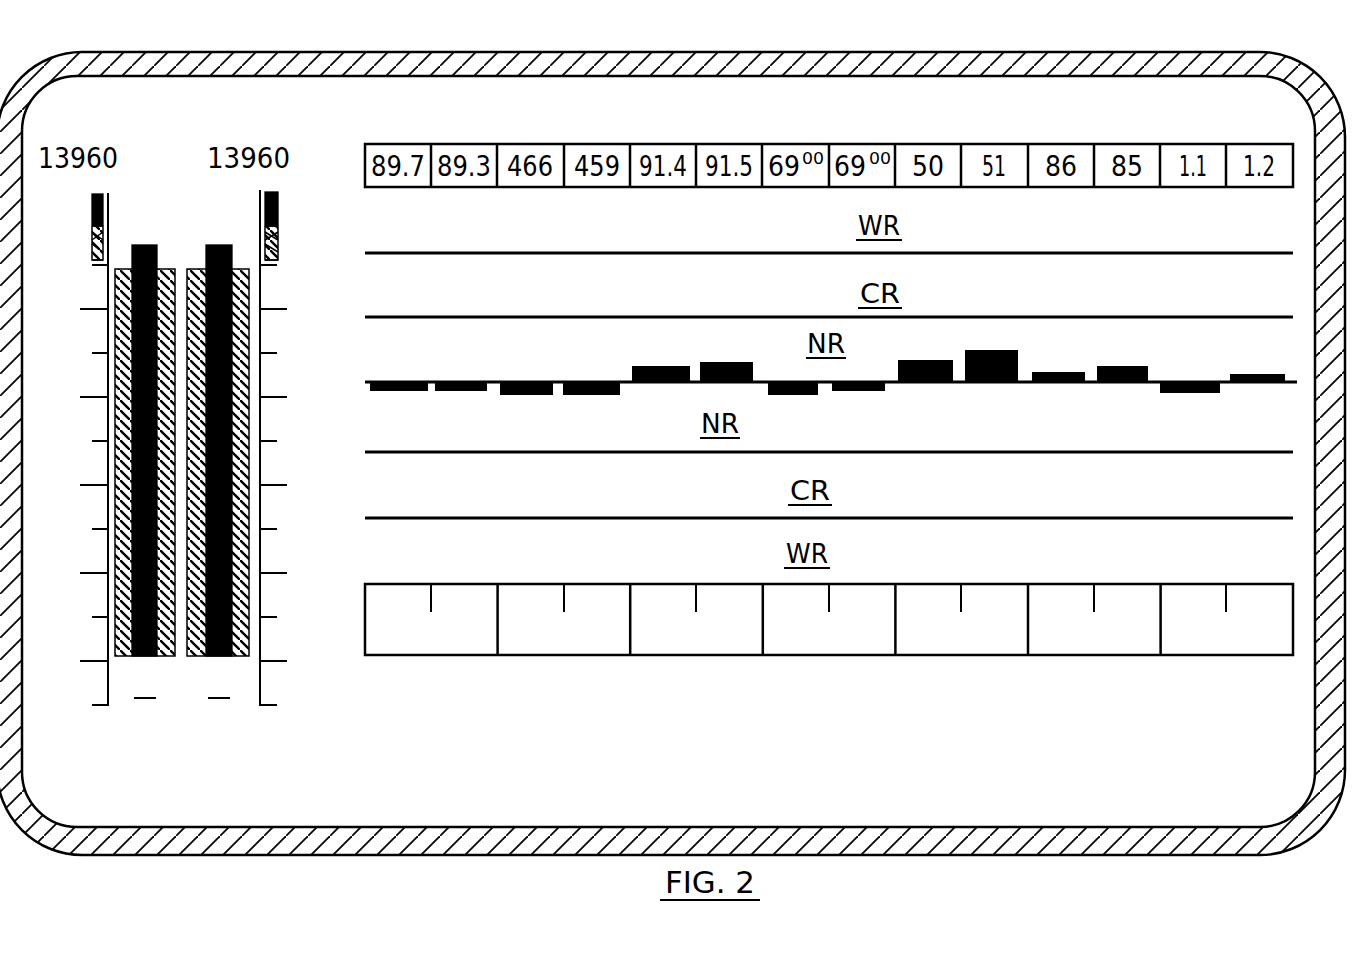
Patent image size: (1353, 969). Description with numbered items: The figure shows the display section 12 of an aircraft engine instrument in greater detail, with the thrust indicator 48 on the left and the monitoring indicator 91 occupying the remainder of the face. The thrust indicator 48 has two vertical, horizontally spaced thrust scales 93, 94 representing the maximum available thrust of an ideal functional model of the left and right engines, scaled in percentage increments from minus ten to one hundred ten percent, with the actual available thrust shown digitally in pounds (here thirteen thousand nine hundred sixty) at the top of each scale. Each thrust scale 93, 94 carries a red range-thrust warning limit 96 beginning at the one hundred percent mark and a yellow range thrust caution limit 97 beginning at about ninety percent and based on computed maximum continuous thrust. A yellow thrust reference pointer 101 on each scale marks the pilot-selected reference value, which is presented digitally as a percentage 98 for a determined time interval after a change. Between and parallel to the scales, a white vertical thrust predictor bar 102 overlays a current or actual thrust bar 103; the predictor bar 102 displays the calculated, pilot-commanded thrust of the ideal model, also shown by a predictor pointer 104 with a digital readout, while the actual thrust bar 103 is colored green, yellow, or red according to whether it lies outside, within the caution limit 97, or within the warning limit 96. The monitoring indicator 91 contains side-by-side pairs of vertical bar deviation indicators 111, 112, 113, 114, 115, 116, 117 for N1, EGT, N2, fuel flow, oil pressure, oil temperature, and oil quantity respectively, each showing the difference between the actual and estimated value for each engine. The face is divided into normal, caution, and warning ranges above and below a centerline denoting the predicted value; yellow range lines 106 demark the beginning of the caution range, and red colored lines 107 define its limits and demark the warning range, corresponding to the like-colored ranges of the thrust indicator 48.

The display section 12 is at (672, 470).
The thrust indicator 48 is at (189, 493).
The monitoring indicator 91 is at (781, 736).
The thrust scale 93 is at (67, 472).
The thrust scale 94 is at (296, 471).
The range-thrust warning limit 96 is at (217, 202).
The range thrust caution limit 97 is at (218, 268).
The thrust reference digital value 98 is at (180, 240).
The thrust reference pointer 101 is at (187, 271).
The thrust predictor bar 102 is at (189, 450).
The actual thrust bar 103 is at (189, 462).
The predictor pointer 104 is at (208, 219).
The range line 106 is at (829, 365).
The colored line 107 is at (829, 364).
The bar deviation indicator 111 is at (428, 366).
The bar deviation indicator 112 is at (560, 369).
The bar deviation indicator 113 is at (692, 355).
The bar deviation indicator 114 is at (826, 408).
The bar deviation indicator 115 is at (958, 391).
The bar deviation indicator 116 is at (1090, 359).
The bar deviation indicator 117 is at (1222, 364).